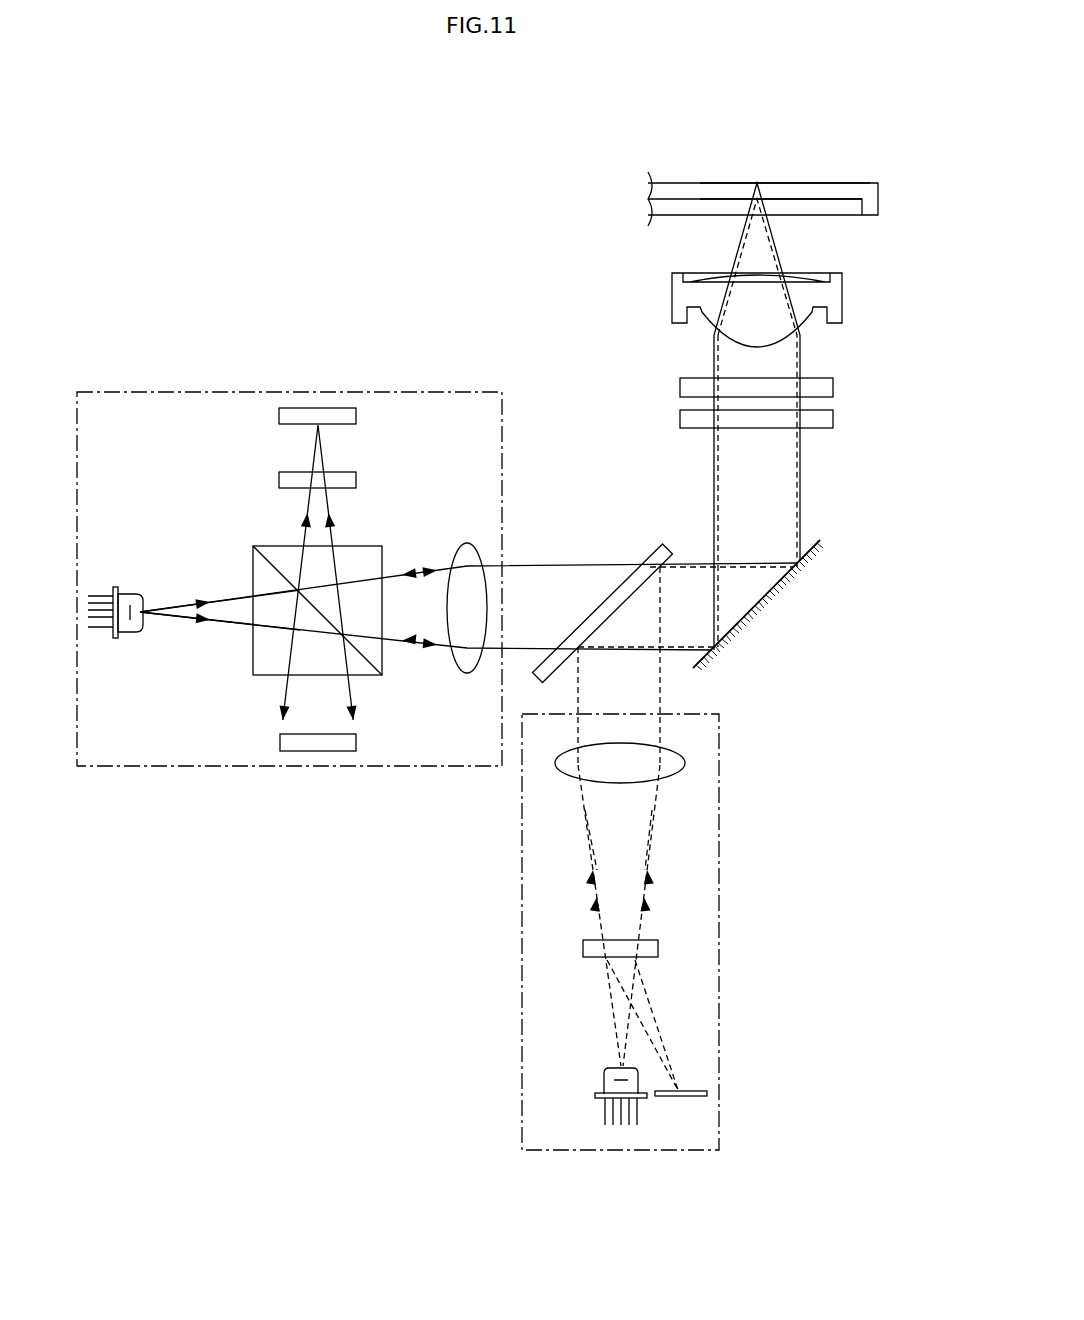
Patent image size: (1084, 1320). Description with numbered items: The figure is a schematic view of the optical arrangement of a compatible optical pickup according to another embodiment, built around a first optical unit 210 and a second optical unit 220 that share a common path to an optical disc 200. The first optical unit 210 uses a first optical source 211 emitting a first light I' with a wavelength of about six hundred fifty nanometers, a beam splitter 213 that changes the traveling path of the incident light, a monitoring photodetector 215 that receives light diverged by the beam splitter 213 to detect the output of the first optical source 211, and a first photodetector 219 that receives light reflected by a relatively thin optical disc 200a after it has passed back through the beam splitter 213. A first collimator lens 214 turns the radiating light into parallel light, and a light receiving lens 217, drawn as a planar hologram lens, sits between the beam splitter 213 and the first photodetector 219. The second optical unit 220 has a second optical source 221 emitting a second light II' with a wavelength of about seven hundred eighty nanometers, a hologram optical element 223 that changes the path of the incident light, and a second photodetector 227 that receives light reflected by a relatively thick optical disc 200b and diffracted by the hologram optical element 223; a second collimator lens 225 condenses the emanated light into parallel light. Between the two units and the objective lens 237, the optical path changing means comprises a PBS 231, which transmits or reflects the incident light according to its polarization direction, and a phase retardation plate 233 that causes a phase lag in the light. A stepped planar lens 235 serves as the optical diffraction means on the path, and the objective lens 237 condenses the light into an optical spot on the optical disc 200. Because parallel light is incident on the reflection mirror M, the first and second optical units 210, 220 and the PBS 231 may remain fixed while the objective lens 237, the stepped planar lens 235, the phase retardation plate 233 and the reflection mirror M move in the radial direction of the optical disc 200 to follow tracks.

The optical disc 200 is at (878, 165).
The relatively thin optical disc 200a is at (853, 208).
The relatively thick optical disc 200b is at (812, 183).
The objective lens 237 is at (840, 301).
The stepped planar lens 235 is at (835, 387).
The phase retardation plate 233 is at (835, 420).
The PBS 231 is at (648, 550).
The reflection mirror M is at (810, 552).
The first optical unit 210 is at (407, 380).
The first photodetector 219 is at (356, 414).
The light receiving lens 217 is at (356, 478).
The beam splitter 213 is at (258, 567).
The first optical source 211 is at (123, 642).
The first light I' is at (220, 670).
The first collimator lens 214 is at (467, 663).
The monitoring photodetector 215 is at (307, 745).
The second optical unit 220 is at (735, 715).
The second collimator lens 225 is at (683, 762).
The second light II' is at (694, 840).
The hologram optical element 223 is at (583, 945).
The second optical source 221 is at (604, 1082).
The second photodetector 227 is at (708, 1094).